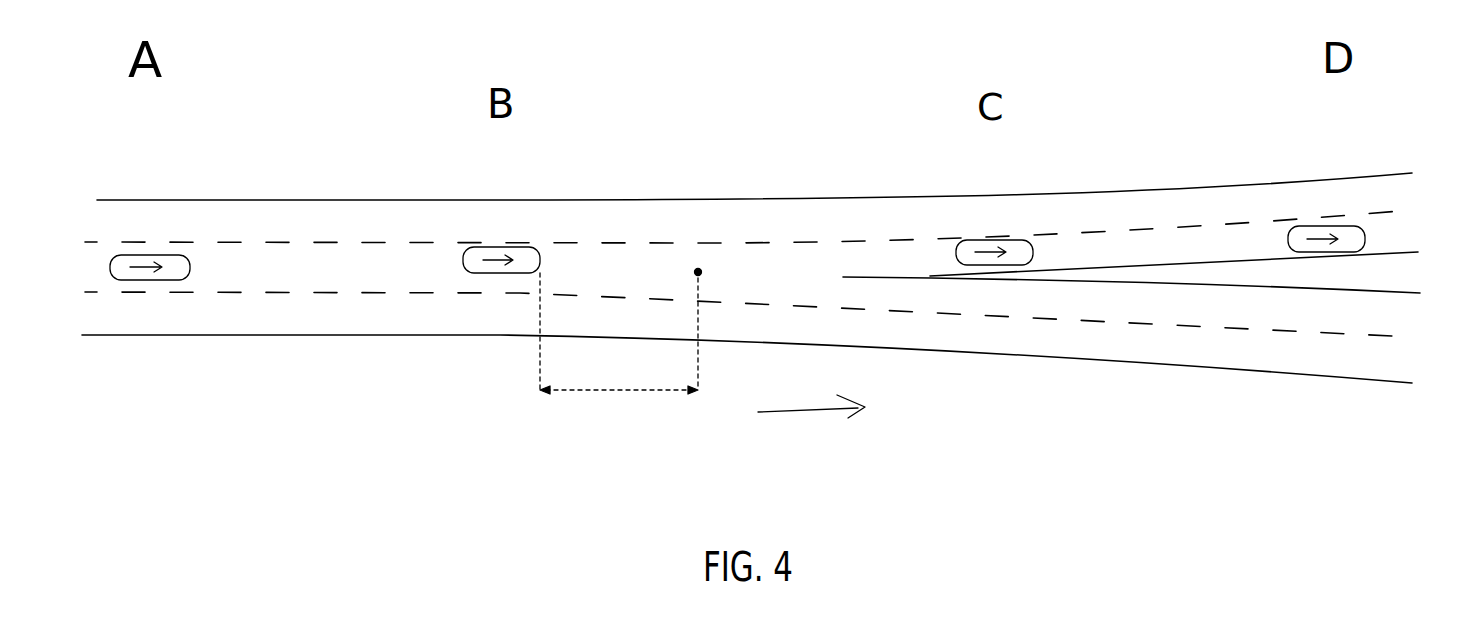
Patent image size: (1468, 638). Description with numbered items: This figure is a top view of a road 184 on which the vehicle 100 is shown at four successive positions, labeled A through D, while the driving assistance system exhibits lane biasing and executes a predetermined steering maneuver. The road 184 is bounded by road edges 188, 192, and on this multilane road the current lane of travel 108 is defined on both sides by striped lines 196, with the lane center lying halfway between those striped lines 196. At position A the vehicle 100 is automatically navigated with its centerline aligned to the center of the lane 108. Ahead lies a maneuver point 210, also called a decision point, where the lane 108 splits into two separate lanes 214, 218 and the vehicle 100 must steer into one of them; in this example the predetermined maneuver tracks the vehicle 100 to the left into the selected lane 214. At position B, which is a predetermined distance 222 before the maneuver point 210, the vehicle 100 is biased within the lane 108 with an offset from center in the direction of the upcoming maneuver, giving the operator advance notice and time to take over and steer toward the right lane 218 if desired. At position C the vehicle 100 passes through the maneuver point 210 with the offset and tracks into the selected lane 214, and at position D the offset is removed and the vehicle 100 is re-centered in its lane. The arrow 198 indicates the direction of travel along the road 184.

The road edge 192 is at (157, 200).
The road edge 188 is at (195, 340).
The striped line 196 is at (237, 240).
The vehicle 100 is at (192, 270).
The current lane of travel 108 is at (347, 278).
The maneuver point 210 is at (697, 268).
The predetermined distance 222 is at (598, 394).
The road 184 is at (778, 266).
The selected lane 214 is at (913, 268).
The lane 218 is at (930, 305).
The direction of travel 198 is at (808, 412).